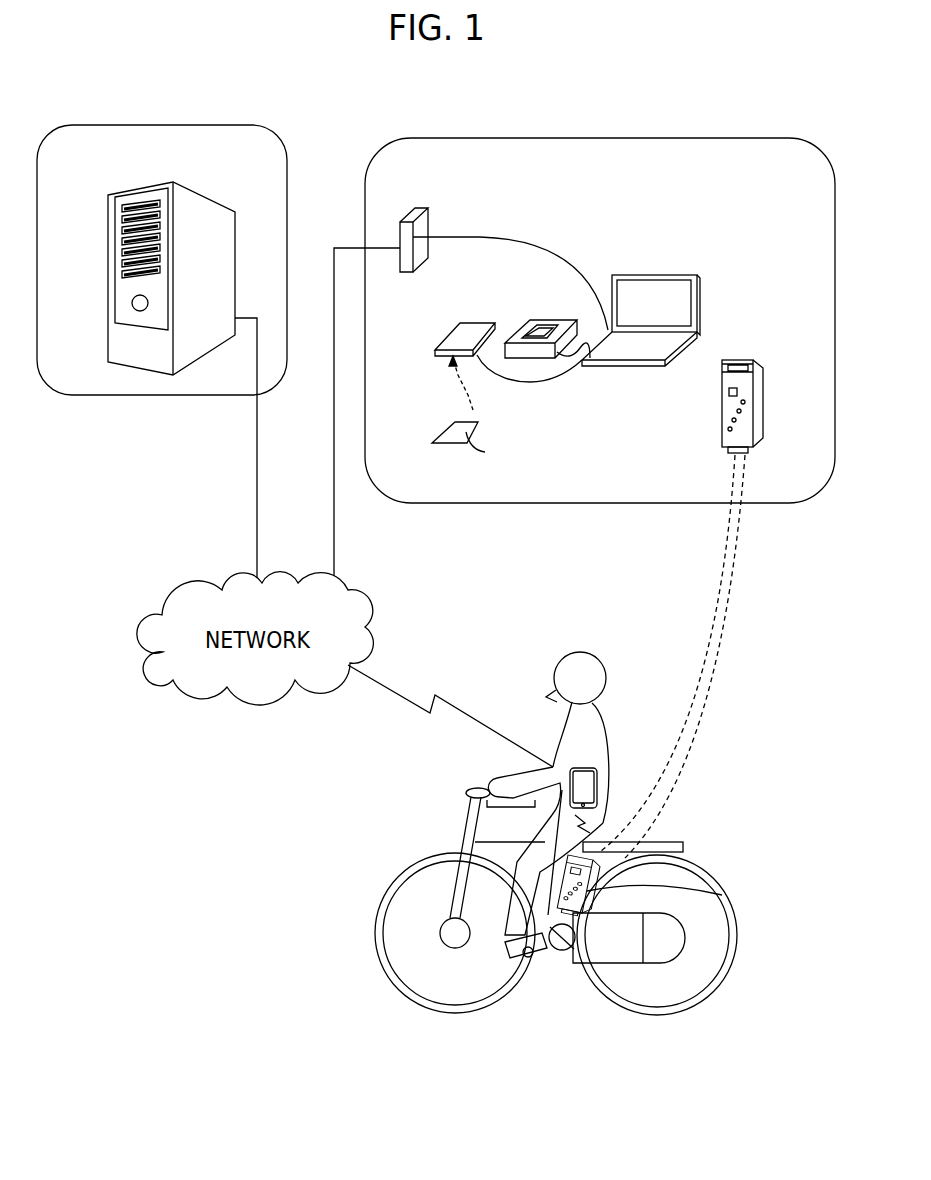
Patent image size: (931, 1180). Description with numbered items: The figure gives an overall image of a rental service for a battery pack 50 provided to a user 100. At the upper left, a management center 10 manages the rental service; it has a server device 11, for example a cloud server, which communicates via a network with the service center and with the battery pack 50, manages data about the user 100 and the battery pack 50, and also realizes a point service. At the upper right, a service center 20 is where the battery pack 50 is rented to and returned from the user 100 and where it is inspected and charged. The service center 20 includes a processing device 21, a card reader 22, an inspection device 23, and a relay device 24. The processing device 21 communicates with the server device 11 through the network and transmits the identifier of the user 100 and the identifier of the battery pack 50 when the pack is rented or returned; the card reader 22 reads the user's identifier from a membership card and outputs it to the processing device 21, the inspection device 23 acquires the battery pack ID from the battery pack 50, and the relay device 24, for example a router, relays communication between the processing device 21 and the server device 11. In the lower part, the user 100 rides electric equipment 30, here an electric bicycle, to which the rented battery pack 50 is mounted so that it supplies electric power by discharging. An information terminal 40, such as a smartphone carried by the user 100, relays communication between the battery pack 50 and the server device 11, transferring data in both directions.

The management center 10 is at (172, 125).
The server device 11 is at (235, 256).
The service center 20 is at (603, 138).
The processing device 21 is at (638, 277).
The card reader 22 is at (477, 325).
The inspection device 23 is at (555, 322).
The relay device 24 is at (421, 208).
The electric equipment 30 is at (468, 817).
The information terminal 40 is at (597, 765).
The battery pack 50 is at (763, 386).
The user 100 is at (580, 655).